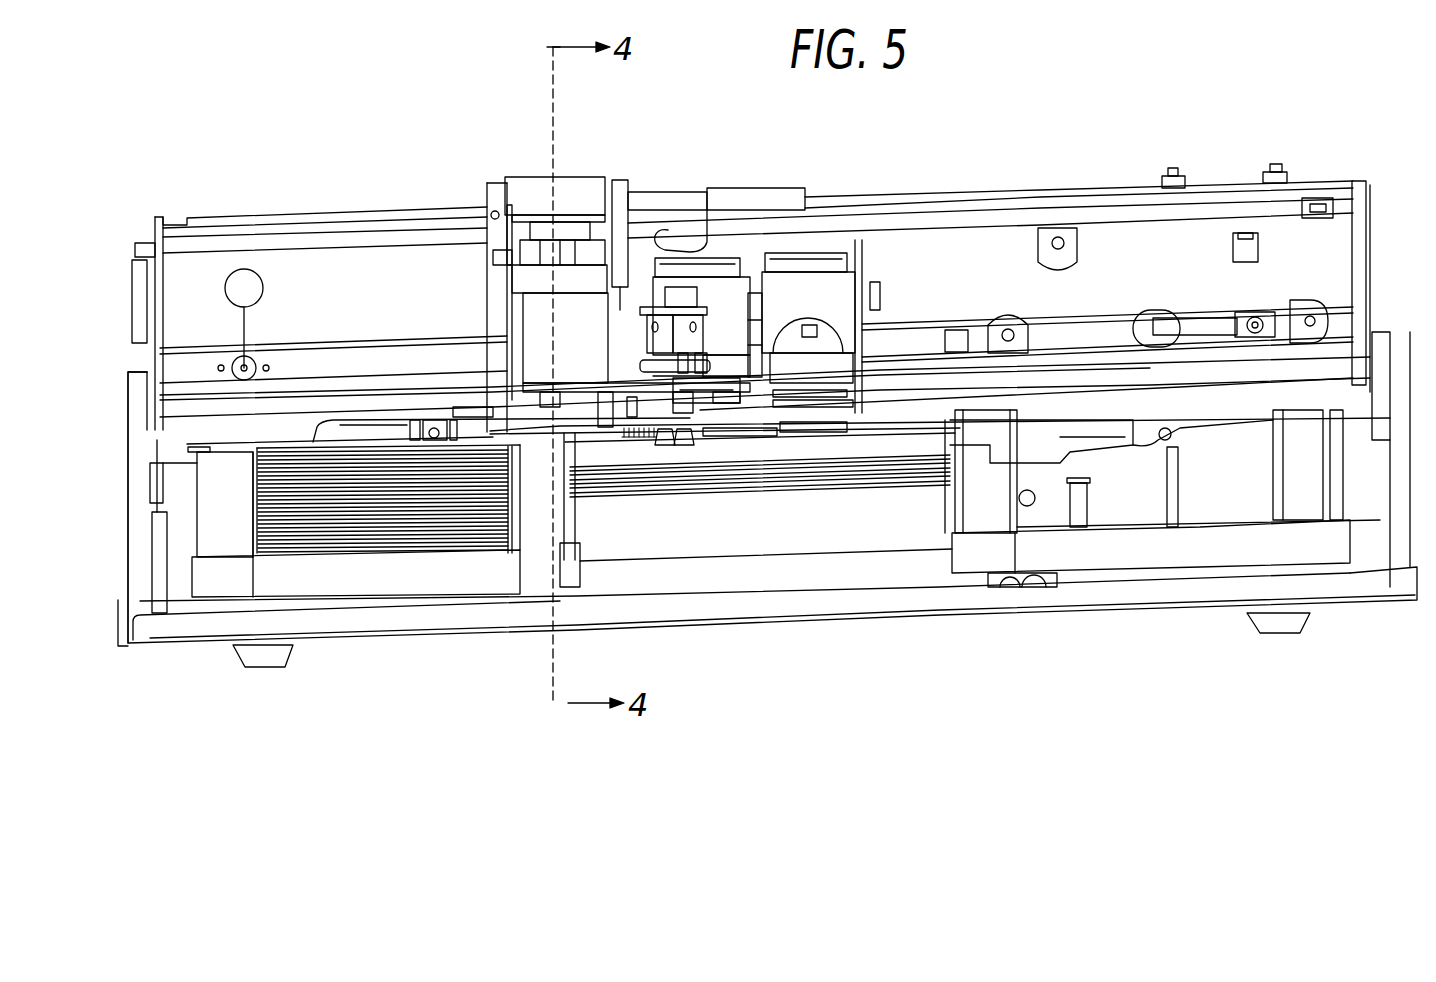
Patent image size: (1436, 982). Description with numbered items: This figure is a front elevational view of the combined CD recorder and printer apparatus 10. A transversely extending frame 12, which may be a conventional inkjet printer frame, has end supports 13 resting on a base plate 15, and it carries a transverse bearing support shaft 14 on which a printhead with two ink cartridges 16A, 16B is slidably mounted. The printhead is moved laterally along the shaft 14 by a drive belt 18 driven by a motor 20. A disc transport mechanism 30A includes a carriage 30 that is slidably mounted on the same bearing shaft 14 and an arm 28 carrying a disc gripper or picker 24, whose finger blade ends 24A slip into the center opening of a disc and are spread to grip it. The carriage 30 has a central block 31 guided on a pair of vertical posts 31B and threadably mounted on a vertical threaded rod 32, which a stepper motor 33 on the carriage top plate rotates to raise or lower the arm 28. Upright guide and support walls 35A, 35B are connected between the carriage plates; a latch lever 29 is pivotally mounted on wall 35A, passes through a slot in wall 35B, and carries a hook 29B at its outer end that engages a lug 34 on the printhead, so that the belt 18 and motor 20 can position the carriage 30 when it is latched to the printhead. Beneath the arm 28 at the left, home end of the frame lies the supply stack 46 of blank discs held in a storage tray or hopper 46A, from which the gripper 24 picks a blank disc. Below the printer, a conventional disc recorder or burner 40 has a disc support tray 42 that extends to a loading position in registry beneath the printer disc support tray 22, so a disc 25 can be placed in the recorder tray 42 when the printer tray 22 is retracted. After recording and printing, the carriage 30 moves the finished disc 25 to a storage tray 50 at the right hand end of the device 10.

The disc printer and recorder apparatus 10 is at (989, 164).
The frame 12 is at (1155, 235).
The end supports 13 is at (1372, 188).
The bearing support shaft 14 is at (1265, 368).
The base plate 15 is at (1060, 617).
The ink cartridge 16A is at (838, 290).
The ink cartridge 16B is at (716, 298).
The drive belt 18 is at (1068, 312).
The motor 20 is at (265, 282).
The printer disc support tray 22 is at (632, 455).
The disc gripper 24 is at (636, 343).
The gripper blade ends 24A is at (660, 447).
The disc 25 is at (733, 441).
The arm 28 is at (587, 378).
The latch lever 29 is at (702, 212).
The hook 29B is at (680, 235).
The carriage 30 is at (515, 330).
The disc transport mechanism 30A is at (488, 288).
The central block 31 is at (472, 191).
The vertical posts 31B is at (610, 190).
The threaded rod 32 is at (559, 230).
The stepper motor 33 is at (536, 190).
The lug 34 is at (670, 200).
The upright guide and support wall 35A is at (493, 260).
The upright guide and support wall 35B is at (622, 180).
The disc recorder 40 is at (843, 545).
The recorder disc support tray 42 is at (920, 485).
The supply stack 46 is at (398, 547).
The storage tray or hopper 46A is at (372, 577).
The storage tray 50 is at (1148, 556).